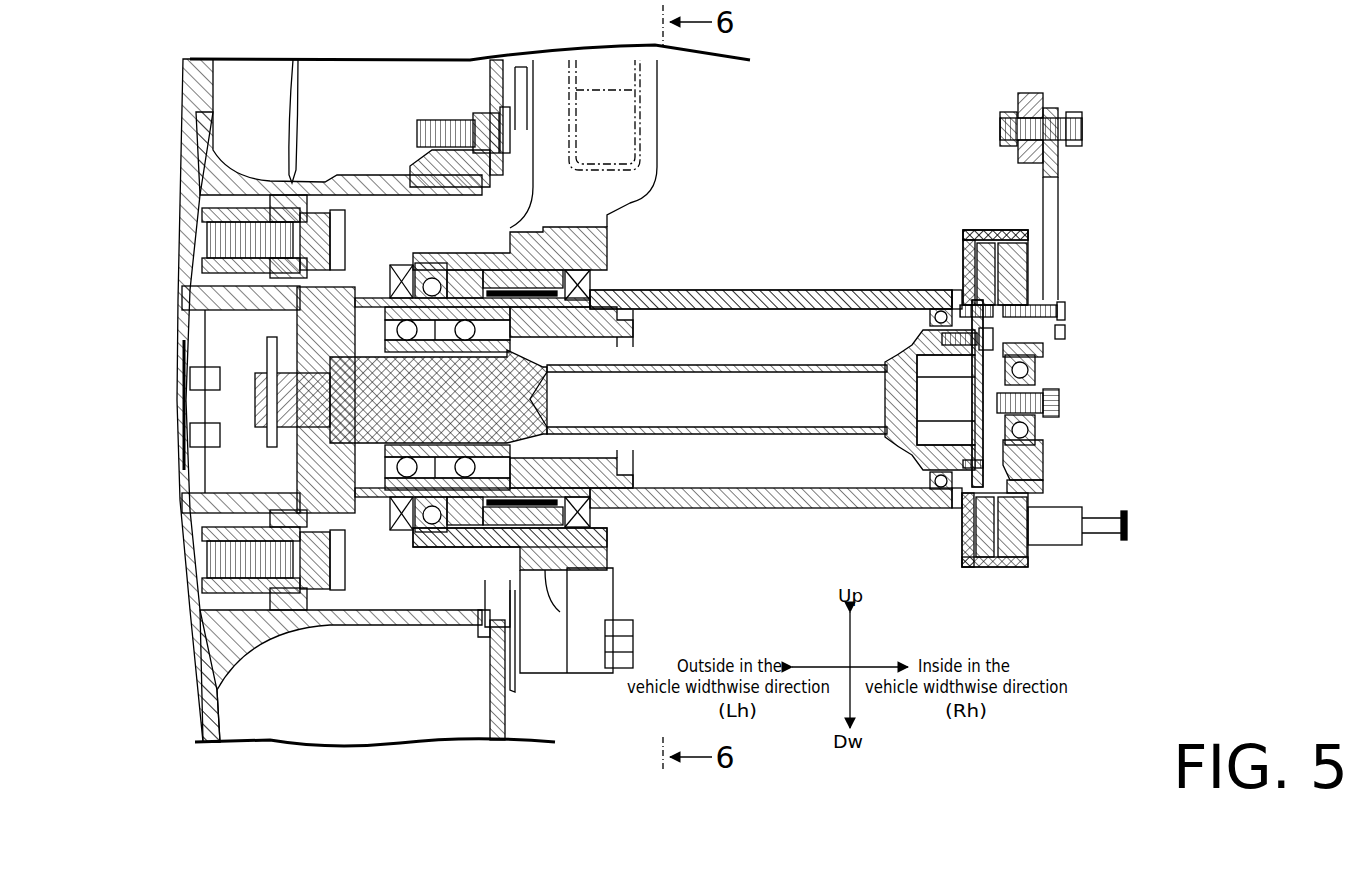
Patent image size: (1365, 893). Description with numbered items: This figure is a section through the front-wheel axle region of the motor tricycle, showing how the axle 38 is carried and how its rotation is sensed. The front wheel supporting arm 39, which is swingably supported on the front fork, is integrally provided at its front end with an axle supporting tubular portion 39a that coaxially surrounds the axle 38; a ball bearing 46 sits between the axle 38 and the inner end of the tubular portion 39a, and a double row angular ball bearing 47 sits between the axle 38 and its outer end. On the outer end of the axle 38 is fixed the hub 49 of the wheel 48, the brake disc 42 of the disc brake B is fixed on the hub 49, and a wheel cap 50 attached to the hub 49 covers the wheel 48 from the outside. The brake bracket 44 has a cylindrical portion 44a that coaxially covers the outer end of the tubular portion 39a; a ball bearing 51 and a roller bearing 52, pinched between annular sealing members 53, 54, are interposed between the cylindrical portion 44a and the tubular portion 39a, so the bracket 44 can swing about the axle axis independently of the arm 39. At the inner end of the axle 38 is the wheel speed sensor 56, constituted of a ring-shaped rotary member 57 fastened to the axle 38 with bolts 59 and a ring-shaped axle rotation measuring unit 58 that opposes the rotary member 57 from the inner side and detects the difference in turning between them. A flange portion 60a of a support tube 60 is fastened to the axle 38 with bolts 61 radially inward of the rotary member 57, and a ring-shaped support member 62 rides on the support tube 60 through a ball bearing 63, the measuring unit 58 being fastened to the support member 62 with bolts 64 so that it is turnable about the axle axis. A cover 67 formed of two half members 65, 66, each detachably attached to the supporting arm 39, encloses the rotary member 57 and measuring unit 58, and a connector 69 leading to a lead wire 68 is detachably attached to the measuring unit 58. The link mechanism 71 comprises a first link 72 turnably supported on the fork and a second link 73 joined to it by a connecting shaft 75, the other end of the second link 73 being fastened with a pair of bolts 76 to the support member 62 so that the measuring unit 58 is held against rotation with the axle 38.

The axle 38 is at (760, 363).
The front wheel supporting arm 39 is at (816, 290).
The axle supporting tubular portion 39a is at (656, 291).
The brake disc 42 is at (504, 722).
The brake bracket 44 is at (648, 166).
The cylindrical portion 44a is at (472, 533).
The ball bearing 46 is at (938, 287).
The double row angular ball bearing 47 is at (410, 486).
The wheel 48 is at (399, 172).
The hub 49 is at (333, 622).
The wheel cap 50 is at (194, 672).
The ball bearing 51 is at (432, 280).
The roller bearing 52 is at (540, 290).
The annular sealing member 53 is at (393, 272).
The annular sealing member 54 is at (602, 280).
The wheel speed sensor 56 is at (642, 105).
The rotary member 57 is at (984, 235).
The axle rotation measuring unit 58 is at (1028, 254).
The bolts 59 is at (977, 520).
The support tube 60 is at (1043, 403).
The flange portion 60a is at (975, 435).
The bolts 61 is at (925, 334).
The support member 62 is at (1040, 458).
The ball bearing 63 is at (1038, 368).
The bolts 64 is at (1046, 491).
The half member 65 is at (1007, 233).
The half member 66 is at (964, 547).
The cover 67 is at (998, 575).
The lead wire 68 is at (1103, 530).
The connector 69 is at (1057, 540).
The link mechanism 71 is at (1065, 192).
The first link 72 is at (1026, 94).
The second link 73 is at (1060, 210).
The connecting shaft 75 is at (1025, 132).
The bolts 76 is at (1066, 313).
The disc brake B is at (528, 680).